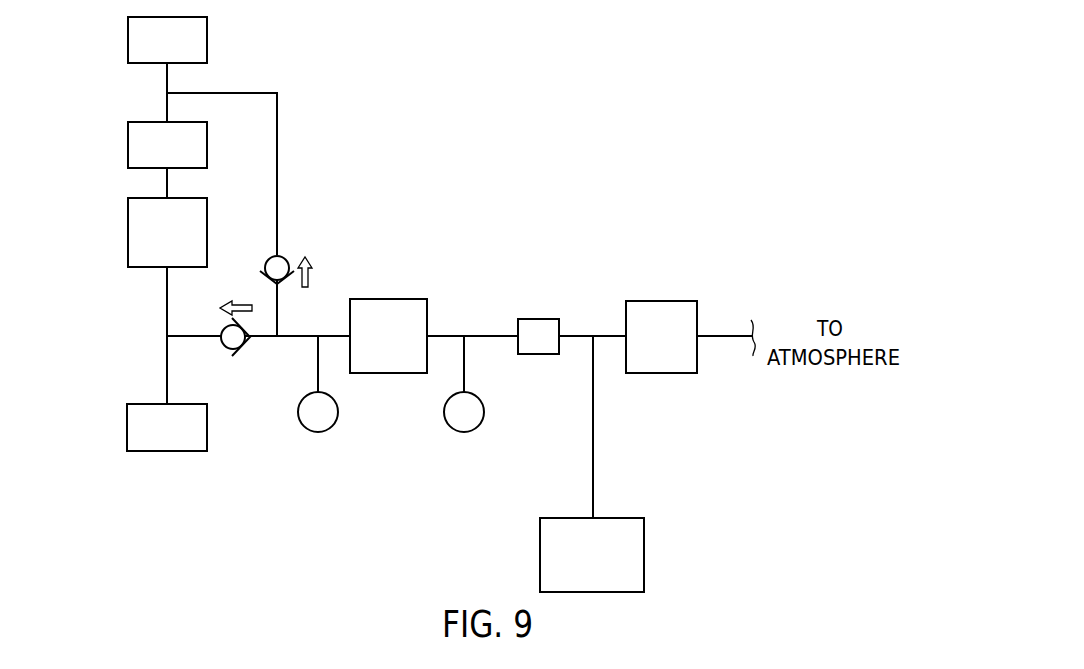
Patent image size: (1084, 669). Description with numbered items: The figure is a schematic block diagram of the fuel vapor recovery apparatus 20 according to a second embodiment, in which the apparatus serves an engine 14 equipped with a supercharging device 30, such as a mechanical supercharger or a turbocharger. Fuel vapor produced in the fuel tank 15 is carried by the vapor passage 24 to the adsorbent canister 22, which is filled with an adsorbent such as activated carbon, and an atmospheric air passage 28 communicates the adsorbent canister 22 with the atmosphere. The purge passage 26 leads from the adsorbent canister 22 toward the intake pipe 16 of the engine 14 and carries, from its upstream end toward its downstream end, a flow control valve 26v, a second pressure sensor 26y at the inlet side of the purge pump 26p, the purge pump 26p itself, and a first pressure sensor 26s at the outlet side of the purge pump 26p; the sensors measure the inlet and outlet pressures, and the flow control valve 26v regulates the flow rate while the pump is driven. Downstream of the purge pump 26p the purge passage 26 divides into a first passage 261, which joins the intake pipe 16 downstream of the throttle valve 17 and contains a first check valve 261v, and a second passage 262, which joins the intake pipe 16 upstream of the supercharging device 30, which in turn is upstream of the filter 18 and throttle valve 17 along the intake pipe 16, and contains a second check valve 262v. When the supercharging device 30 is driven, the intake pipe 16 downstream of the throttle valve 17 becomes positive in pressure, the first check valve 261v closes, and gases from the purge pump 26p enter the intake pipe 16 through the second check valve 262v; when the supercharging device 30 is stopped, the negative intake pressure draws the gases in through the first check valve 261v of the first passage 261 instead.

The internal combustion engine 14 is at (143, 453).
The fuel tank 15 is at (645, 553).
The intake pipe 16 is at (166, 299).
The throttle valve 17 is at (127, 229).
The filter 18 is at (127, 31).
The fuel vapor recovery apparatus 20 is at (564, 251).
The adsorbent canister 22 is at (661, 374).
The vapor passage 24 is at (594, 462).
The purge passage 26 is at (575, 334).
The purge pump 26p is at (400, 374).
The first pressure sensor 26s is at (300, 405).
The second pressure sensor 26y is at (484, 412).
The flow control valve 26v is at (541, 355).
The atmospheric air passage 28 is at (727, 336).
The supercharging device 30 is at (127, 136).
The first passage 261 is at (212, 340).
The first check valve 261v is at (234, 350).
The second passage 262 is at (232, 92).
The second check valve 262v is at (284, 263).